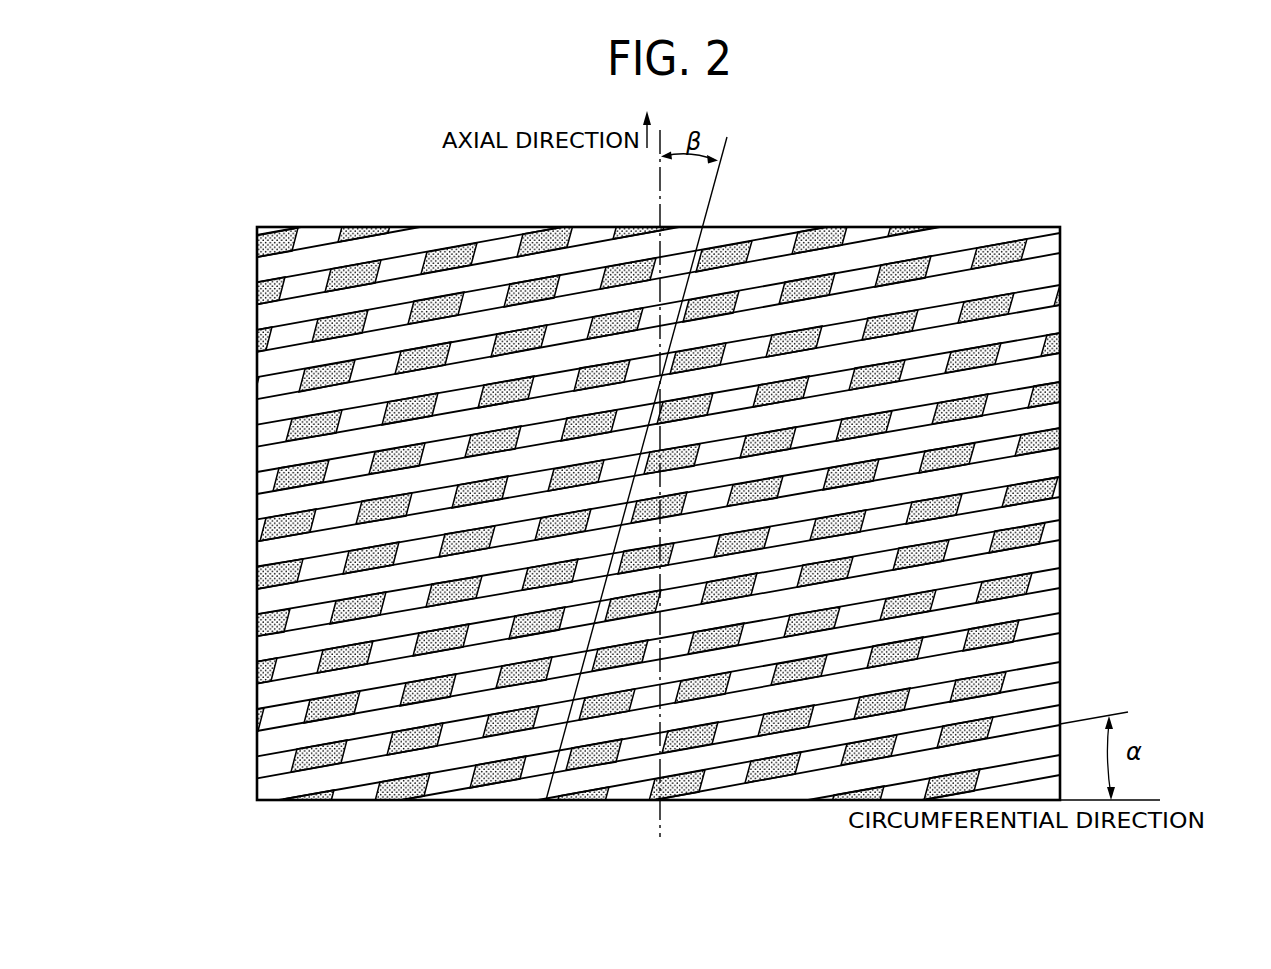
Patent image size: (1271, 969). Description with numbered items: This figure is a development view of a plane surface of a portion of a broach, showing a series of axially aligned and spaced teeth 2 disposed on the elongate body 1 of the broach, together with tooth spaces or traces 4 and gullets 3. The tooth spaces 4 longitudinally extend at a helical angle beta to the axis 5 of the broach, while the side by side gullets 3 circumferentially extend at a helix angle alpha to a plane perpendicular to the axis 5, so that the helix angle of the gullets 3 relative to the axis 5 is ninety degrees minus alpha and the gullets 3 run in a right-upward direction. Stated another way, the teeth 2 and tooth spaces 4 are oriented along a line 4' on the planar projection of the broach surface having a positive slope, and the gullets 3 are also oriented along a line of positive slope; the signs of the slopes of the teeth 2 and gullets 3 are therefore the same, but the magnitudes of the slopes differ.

The elongate body 1 is at (893, 205).
The teeth 2 is at (973, 322).
The gullets 3 is at (983, 237).
The tooth spaces 4 is at (656, 511).
The line 4' is at (618, 487).
The axis 5 is at (660, 188).